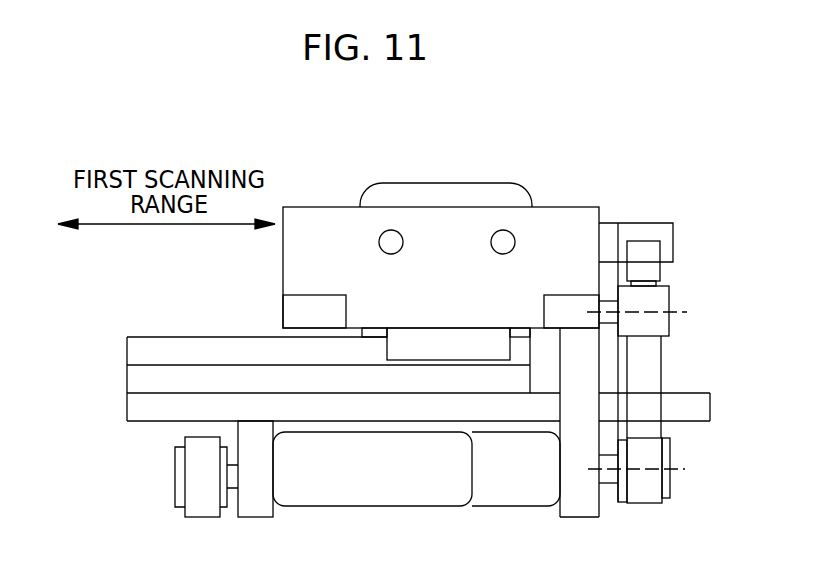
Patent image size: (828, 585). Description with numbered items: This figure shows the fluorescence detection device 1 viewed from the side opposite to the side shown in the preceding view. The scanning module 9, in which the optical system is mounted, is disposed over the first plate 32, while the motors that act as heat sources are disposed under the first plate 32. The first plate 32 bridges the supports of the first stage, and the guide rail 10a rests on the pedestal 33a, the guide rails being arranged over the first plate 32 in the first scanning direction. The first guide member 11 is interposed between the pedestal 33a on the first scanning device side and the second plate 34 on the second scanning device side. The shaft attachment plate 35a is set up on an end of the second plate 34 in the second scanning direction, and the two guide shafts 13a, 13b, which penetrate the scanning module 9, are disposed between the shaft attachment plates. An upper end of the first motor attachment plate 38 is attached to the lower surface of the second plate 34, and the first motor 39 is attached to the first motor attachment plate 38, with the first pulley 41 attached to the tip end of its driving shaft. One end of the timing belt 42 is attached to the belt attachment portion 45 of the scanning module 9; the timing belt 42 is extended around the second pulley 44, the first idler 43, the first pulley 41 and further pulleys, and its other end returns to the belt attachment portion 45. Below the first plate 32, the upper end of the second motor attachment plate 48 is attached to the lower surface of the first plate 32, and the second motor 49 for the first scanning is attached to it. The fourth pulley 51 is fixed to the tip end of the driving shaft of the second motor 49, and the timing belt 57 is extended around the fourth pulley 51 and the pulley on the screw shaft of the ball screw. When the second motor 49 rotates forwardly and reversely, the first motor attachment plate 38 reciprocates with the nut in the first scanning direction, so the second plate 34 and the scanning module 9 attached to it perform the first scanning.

The fluorescence detection device 1 is at (260, 136).
The scanning module 9 is at (445, 182).
The guide rail 10a is at (150, 337).
The first guide member 11 is at (448, 334).
The guide shaft 13a is at (388, 234).
The guide shaft 13b is at (506, 234).
The first plate 32 is at (127, 406).
The pedestal 33a is at (127, 378).
The second plate 34 is at (292, 310).
The shaft attachment plate 35a is at (590, 206).
The first motor attachment plate 38 is at (580, 520).
The first motor 39 is at (497, 508).
The first pulley 41 is at (671, 485).
The timing belt 42 is at (663, 357).
The first idler 43 is at (670, 296).
The second pulley 44 is at (662, 268).
The belt attachment portion 45 is at (645, 222).
The second motor attachment plate 48 is at (256, 520).
The second motor 49 is at (353, 508).
The fourth pulley 51 is at (175, 477).
The timing belt 57 is at (200, 520).